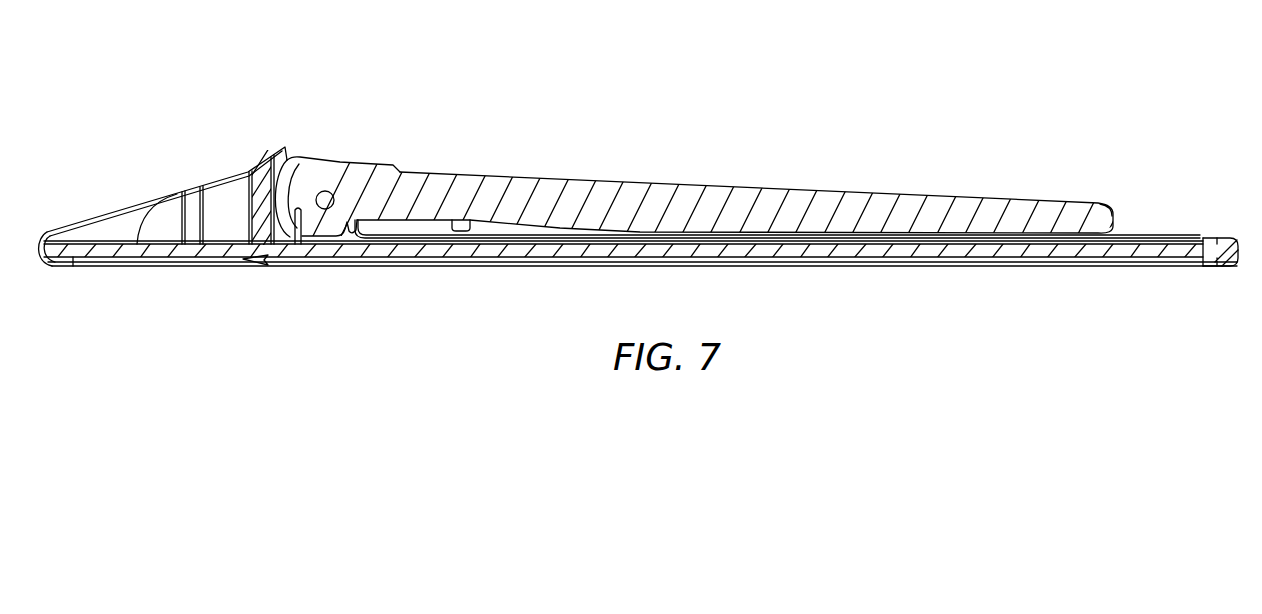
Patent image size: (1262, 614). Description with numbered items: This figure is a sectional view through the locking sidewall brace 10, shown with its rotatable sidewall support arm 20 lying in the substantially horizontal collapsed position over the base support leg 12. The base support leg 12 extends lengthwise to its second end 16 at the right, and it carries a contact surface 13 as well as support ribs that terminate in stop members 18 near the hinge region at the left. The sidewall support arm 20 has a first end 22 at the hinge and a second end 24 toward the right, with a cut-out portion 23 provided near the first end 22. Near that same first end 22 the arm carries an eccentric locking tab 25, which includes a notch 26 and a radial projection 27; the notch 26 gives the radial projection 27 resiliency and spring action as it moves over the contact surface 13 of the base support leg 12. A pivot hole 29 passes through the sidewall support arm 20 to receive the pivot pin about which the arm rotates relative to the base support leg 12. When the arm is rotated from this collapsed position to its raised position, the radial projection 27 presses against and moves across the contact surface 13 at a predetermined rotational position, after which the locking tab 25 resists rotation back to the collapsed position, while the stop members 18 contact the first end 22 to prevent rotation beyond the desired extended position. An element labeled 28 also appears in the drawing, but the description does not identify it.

The locking sidewall brace 10 is at (308, 67).
The base support leg 12 is at (981, 248).
The contact surface 13 is at (297, 163).
The second end 16 is at (1238, 248).
The stop members 18 is at (283, 150).
The rotatable sidewall support arm 20 is at (692, 196).
The first end 22 is at (362, 168).
The cut-out portion 23 is at (457, 230).
The second end 24 is at (1117, 214).
The eccentric locking tab 25 is at (328, 232).
The notch 26 is at (297, 246).
The radial projection 27 is at (283, 218).
The thin strip 28 is at (414, 236).
The pivot hole 29 is at (326, 198).